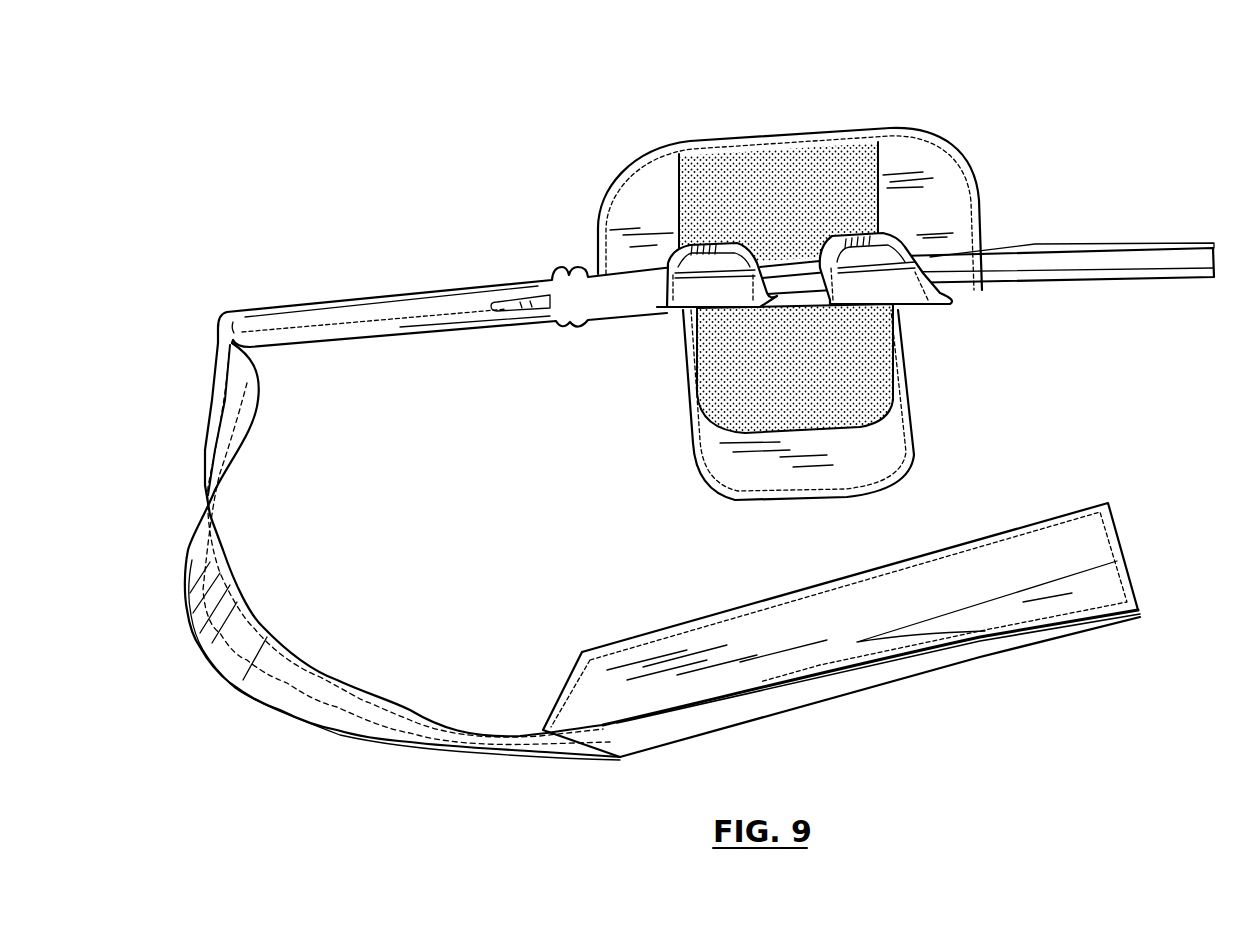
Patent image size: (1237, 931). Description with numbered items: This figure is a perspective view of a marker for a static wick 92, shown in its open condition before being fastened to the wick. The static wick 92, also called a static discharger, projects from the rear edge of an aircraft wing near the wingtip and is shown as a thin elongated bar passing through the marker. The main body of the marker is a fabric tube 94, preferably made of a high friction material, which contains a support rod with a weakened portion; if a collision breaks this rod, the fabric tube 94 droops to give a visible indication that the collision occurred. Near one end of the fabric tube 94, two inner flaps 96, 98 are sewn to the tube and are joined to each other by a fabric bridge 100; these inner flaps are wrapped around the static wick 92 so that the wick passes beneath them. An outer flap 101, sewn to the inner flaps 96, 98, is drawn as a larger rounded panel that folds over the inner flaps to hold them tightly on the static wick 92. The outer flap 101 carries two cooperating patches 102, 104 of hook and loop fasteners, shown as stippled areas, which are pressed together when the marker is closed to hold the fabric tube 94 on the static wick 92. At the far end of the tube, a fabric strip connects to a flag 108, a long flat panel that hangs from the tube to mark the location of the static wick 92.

The static wick 92 is at (1130, 250).
The fabric tube 94 is at (353, 293).
The inner flap 96 is at (707, 277).
The inner flap 98 is at (866, 272).
The fabric bridge 100 is at (795, 300).
The outer flap 101 is at (957, 156).
The patch of hook and loop fastener 102 is at (834, 160).
The patch of hook and loop fastener 104 is at (748, 400).
The flag 108 is at (702, 618).